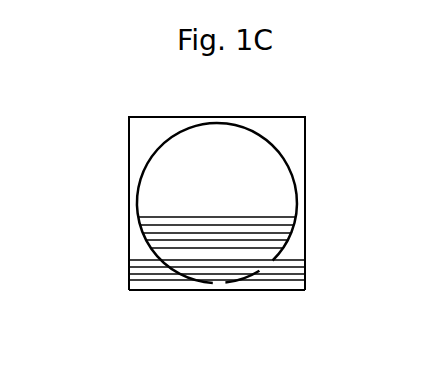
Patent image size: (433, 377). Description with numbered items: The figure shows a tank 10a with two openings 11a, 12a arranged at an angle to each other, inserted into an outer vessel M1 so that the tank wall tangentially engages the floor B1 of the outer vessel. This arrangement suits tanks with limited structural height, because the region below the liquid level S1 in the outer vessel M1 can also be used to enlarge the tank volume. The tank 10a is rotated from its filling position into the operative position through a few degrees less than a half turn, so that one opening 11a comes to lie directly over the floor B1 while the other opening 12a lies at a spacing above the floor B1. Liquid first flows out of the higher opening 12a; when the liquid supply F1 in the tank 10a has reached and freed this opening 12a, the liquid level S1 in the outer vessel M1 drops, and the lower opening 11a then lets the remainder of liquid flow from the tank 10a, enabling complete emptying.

The tank 10a is at (143, 158).
The opening 11a is at (218, 283).
The opening 12a is at (264, 265).
The outer vessel M1 is at (116, 198).
The liquid supply F1 is at (257, 223).
The liquid level S1 is at (287, 260).
The floor B1 is at (183, 291).